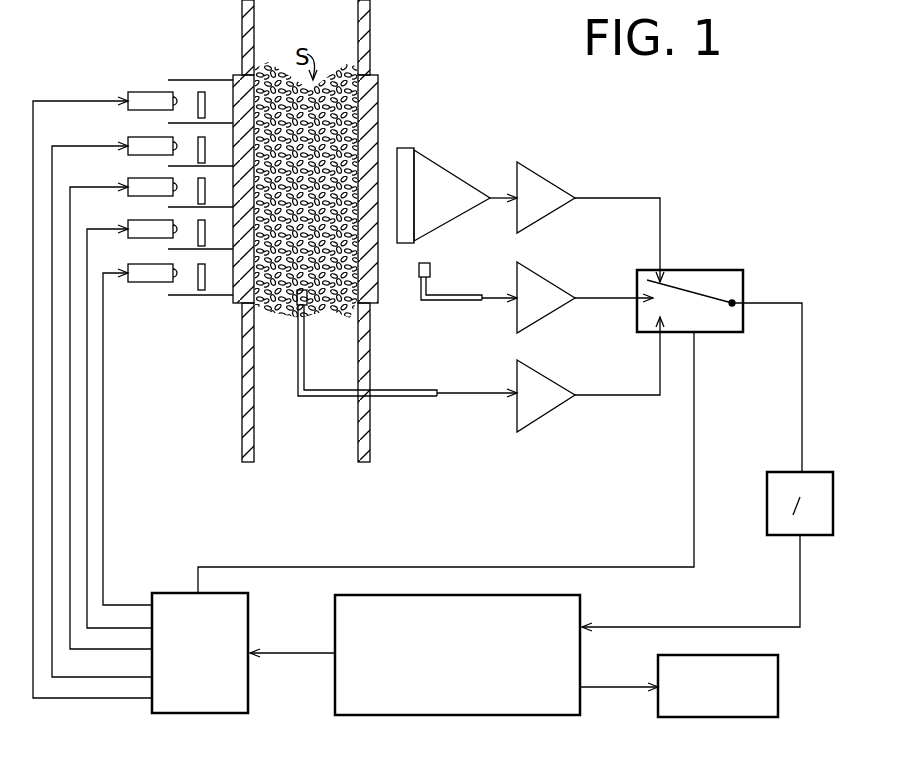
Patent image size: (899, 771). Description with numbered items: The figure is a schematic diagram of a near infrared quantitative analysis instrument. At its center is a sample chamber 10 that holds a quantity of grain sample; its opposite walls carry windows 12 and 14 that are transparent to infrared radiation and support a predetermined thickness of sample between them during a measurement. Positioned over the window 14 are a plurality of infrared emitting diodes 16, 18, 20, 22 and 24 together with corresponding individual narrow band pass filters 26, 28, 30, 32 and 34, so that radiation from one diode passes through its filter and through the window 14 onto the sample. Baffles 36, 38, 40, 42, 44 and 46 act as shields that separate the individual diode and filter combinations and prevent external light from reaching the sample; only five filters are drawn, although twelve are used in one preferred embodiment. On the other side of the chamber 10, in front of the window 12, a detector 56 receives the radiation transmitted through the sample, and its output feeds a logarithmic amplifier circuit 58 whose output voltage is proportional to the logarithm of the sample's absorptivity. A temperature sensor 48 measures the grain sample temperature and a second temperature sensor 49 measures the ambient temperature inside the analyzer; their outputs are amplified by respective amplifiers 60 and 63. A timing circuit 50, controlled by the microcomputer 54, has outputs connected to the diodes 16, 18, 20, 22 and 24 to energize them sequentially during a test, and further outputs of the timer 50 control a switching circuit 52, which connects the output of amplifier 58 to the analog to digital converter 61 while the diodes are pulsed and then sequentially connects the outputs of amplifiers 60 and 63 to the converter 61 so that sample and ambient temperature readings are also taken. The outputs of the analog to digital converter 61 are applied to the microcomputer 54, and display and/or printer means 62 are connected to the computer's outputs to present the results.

The sample chamber 10 is at (381, 73).
The window 12 is at (378, 134).
The window 14 is at (240, 303).
The infrared emitting diode 16 is at (128, 94).
The infrared emitting diode 18 is at (128, 140).
The infrared emitting diode 20 is at (128, 181).
The infrared emitting diode 22 is at (128, 222).
The infrared emitting diode 24 is at (128, 266).
The narrow band pass filter 26 is at (203, 118).
The narrow band pass filter 28 is at (203, 163).
The narrow band pass filter 30 is at (203, 204).
The narrow band pass filter 32 is at (203, 246).
The narrow band pass filter 34 is at (203, 290).
The baffle 36 is at (197, 80).
The baffle 38 is at (173, 123).
The baffle 40 is at (168, 166).
The baffle 42 is at (169, 207).
The baffle 44 is at (169, 249).
The baffle 46 is at (206, 296).
The temperature sensor 48 is at (305, 305).
The temperature sensor 49 is at (430, 272).
The timing circuit 50 is at (250, 612).
The switching circuit 52 is at (692, 268).
The microcomputer 54 is at (335, 610).
The detector 56 is at (440, 165).
The logarithmic amplifier circuit 58 is at (537, 165).
The amplifier 60 is at (537, 375).
The analog to digital converter 61 is at (767, 472).
The display and/or printer means 62 is at (658, 665).
The amplifier 63 is at (537, 270).